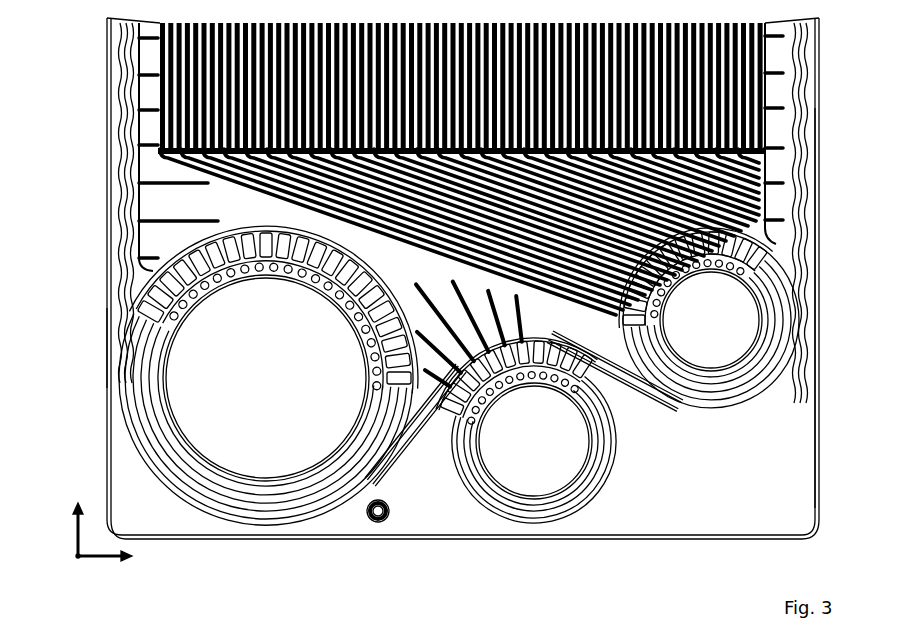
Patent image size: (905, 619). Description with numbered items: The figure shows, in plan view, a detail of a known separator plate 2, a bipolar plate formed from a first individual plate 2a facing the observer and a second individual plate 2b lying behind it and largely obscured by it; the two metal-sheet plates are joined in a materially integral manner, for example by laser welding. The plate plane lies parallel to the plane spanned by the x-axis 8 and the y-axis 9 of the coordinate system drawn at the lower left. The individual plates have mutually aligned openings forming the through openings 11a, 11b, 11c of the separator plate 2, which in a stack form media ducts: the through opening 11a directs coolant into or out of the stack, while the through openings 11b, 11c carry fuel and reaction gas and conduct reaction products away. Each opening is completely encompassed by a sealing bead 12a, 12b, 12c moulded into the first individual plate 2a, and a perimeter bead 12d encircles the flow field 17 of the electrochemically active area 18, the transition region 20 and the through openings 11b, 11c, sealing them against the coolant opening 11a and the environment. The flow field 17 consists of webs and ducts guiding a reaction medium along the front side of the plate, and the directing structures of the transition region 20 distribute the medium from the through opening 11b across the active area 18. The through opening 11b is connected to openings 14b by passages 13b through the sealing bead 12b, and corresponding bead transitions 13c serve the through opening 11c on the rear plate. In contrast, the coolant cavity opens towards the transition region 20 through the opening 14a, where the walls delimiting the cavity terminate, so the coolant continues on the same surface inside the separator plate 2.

The separator plate 2 is at (683, 512).
The first individual plate 2a is at (800, 428).
The second individual plate 2b is at (96, 340).
The x-axis 8 is at (68, 546).
The y-axis 9 is at (70, 551).
The through opening 11a is at (538, 427).
The through opening 11b is at (717, 349).
The through opening 11c is at (271, 401).
The sealing bead 12a is at (525, 505).
The sealing bead 12b is at (773, 330).
The sealing bead 12c is at (253, 483).
The perimeter bead 12d is at (118, 178).
The passage 13b is at (675, 277).
The bead transition 13c is at (176, 300).
The opening 14a is at (460, 332).
The opening 14b is at (755, 237).
The flow field 17 is at (544, 90).
The electrochemically active area 18 is at (344, 79).
The transition region 20 is at (467, 215).